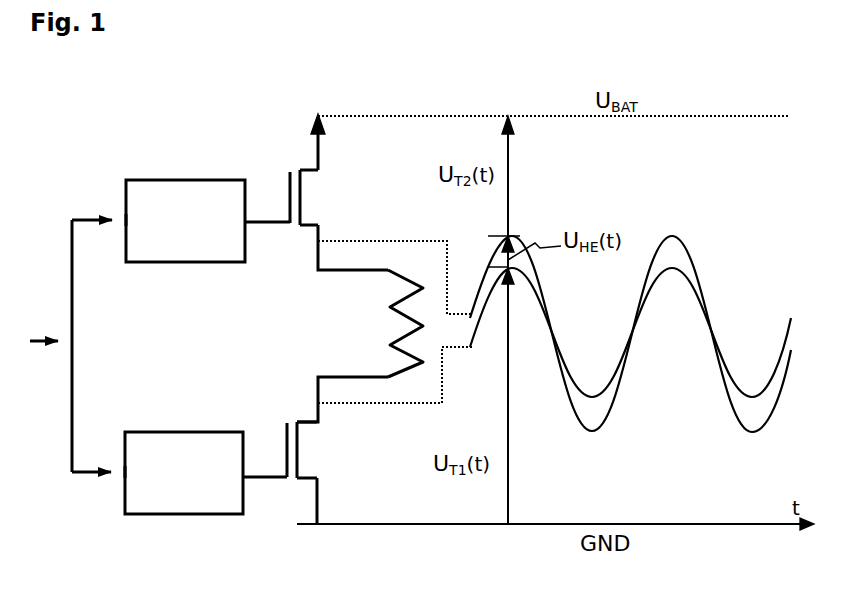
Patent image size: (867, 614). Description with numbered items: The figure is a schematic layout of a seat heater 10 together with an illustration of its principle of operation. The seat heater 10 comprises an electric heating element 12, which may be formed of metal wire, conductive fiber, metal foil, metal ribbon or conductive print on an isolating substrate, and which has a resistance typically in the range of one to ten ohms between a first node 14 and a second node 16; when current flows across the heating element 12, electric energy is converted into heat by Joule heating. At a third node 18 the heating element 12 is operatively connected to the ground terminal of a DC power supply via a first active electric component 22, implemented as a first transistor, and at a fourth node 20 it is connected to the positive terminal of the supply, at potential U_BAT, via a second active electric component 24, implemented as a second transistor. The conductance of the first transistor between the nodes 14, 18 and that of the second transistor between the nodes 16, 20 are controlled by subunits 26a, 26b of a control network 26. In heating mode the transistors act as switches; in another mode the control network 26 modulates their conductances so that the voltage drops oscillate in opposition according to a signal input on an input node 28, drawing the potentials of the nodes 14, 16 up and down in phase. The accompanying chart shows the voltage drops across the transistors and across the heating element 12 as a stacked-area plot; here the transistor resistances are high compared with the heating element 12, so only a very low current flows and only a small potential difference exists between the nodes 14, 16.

The seat heater 10 is at (107, 145).
The electric heating element 12 is at (401, 330).
The first node 14 is at (314, 380).
The second node 16 is at (318, 272).
The third node 18 is at (319, 502).
The fourth node 20 is at (320, 149).
The first active electric component 22 is at (288, 490).
The second active electric component 24 is at (278, 186).
The control network 26 is at (230, 318).
The subunit of the control network 26a is at (167, 431).
The subunit of the control network 26b is at (163, 263).
The input node 28 is at (74, 341).